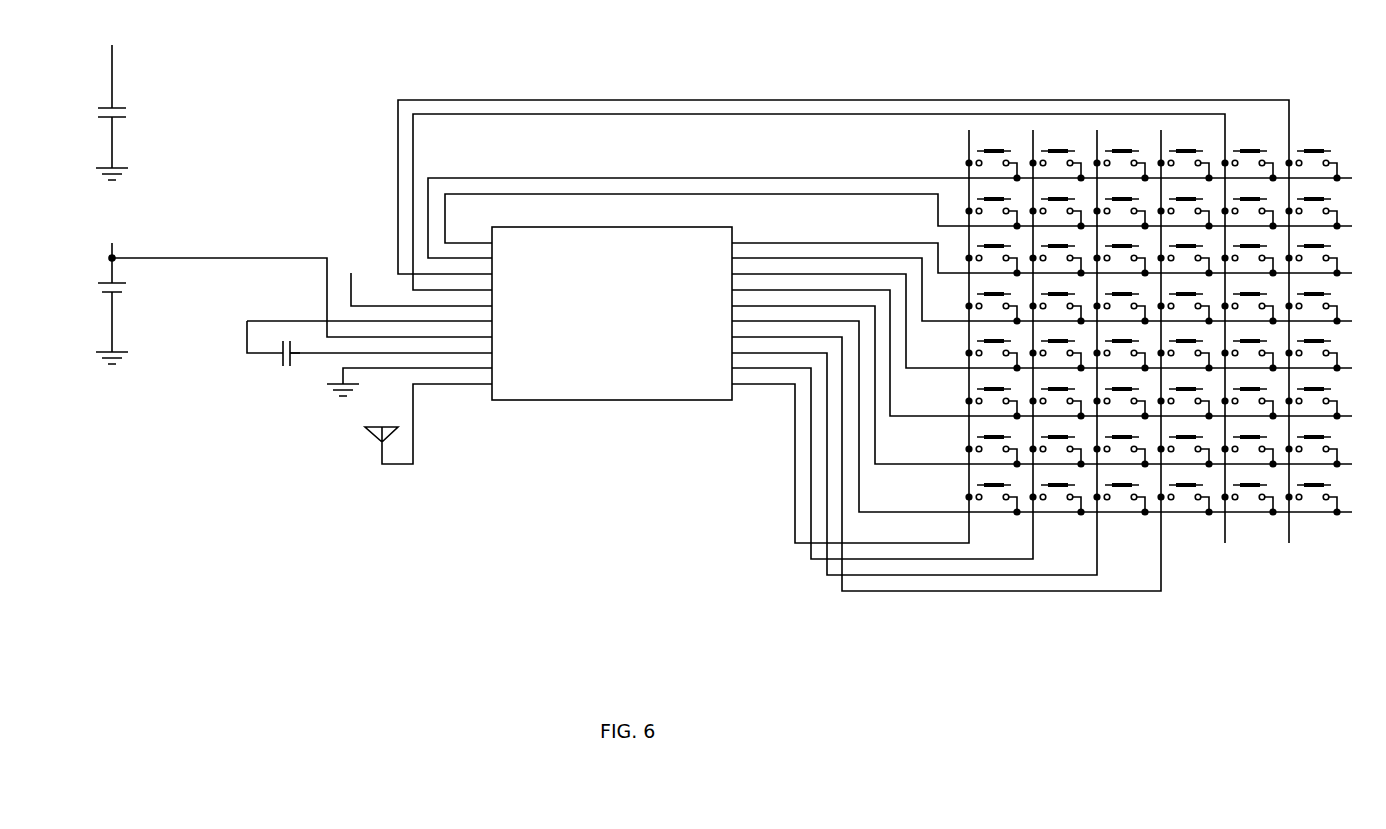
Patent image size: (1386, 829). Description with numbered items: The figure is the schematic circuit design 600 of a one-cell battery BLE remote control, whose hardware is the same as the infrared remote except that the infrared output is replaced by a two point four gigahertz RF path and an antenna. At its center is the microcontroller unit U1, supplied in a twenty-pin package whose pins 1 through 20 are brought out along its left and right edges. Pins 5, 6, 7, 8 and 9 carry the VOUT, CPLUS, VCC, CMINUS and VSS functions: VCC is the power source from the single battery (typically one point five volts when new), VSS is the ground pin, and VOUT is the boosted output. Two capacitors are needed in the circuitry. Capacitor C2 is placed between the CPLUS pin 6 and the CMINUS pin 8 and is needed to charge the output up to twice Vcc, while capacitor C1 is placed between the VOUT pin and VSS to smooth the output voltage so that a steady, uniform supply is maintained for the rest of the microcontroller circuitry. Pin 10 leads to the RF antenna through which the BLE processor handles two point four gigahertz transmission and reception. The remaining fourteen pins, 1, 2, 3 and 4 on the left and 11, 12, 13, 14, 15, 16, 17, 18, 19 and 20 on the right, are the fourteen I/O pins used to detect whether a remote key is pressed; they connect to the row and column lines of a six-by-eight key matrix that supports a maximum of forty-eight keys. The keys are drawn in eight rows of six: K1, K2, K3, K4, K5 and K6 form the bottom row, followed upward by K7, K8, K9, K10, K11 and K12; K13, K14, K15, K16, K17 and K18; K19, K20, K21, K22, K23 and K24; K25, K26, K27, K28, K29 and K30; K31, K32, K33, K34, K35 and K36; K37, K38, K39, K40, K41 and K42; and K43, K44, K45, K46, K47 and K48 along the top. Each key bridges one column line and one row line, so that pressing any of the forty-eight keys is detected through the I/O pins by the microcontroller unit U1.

The schematic circuit design 600 is at (694, 351).
The microcontroller unit U1 is at (612, 307).
The smoothing capacitor C1 is at (91, 106).
The voltage doubler capacitor C2 is at (273, 351).
The I/O pin 1 is at (898, 218).
The I/O pin 2 is at (890, 218).
The I/O pin 3 is at (843, 321).
The I/O pin 4 is at (819, 328).
The VOUT pin 5 is at (416, 283).
The CPLUS pin 6 is at (369, 316).
The VCC pin 7 is at (302, 297).
The CMINUS pin 8 is at (391, 348).
The VSS pin 9 is at (409, 377).
The antenna pin 10 is at (404, 419).
The I/O pin 11 is at (850, 336).
The I/O pin 12 is at (882, 344).
The I/O pin 13 is at (914, 352).
The I/O pin 14 is at (946, 360).
The I/O pin 15 is at (1042, 412).
The I/O pin 16 is at (1042, 380).
The I/O pin 17 is at (1042, 348).
The I/O pin 18 is at (1042, 316).
The I/O pin 19 is at (1042, 285).
The I/O pin 20 is at (1042, 253).
The remote key K1 is at (993, 493).
The remote key K2 is at (1057, 493).
The remote key K3 is at (1121, 493).
The remote key K4 is at (1185, 493).
The remote key K5 is at (1249, 493).
The remote key K6 is at (1313, 493).
The remote key K7 is at (993, 445).
The remote key K8 is at (1057, 445).
The remote key K9 is at (1121, 445).
The remote key K10 is at (1185, 445).
The remote key K11 is at (1249, 445).
The remote key K12 is at (1313, 445).
The remote key K13 is at (993, 397).
The remote key K14 is at (1057, 397).
The remote key K15 is at (1121, 397).
The remote key K16 is at (1185, 397).
The remote key K17 is at (1249, 397).
The remote key K18 is at (1313, 397).
The remote key K19 is at (993, 349).
The remote key K20 is at (1057, 349).
The remote key K21 is at (1121, 349).
The remote key K22 is at (1185, 349).
The remote key K23 is at (1249, 349).
The remote key K24 is at (1313, 349).
The remote key K25 is at (993, 302).
The remote key K26 is at (1057, 302).
The remote key K27 is at (1121, 302).
The remote key K28 is at (1185, 302).
The remote key K29 is at (1249, 302).
The remote key K30 is at (1313, 302).
The remote key K31 is at (993, 254).
The remote key K32 is at (1057, 254).
The remote key K33 is at (1121, 254).
The remote key K34 is at (1185, 254).
The remote key K35 is at (1249, 254).
The remote key K36 is at (1313, 254).
The remote key K37 is at (993, 207).
The remote key K38 is at (1057, 207).
The remote key K39 is at (1121, 207).
The remote key K40 is at (1185, 207).
The remote key K41 is at (1249, 207).
The remote key K42 is at (1313, 207).
The remote key K43 is at (993, 159).
The remote key K44 is at (1057, 159).
The remote key K45 is at (1121, 159).
The remote key K46 is at (1185, 159).
The remote key K47 is at (1249, 159).
The remote key K48 is at (1313, 159).